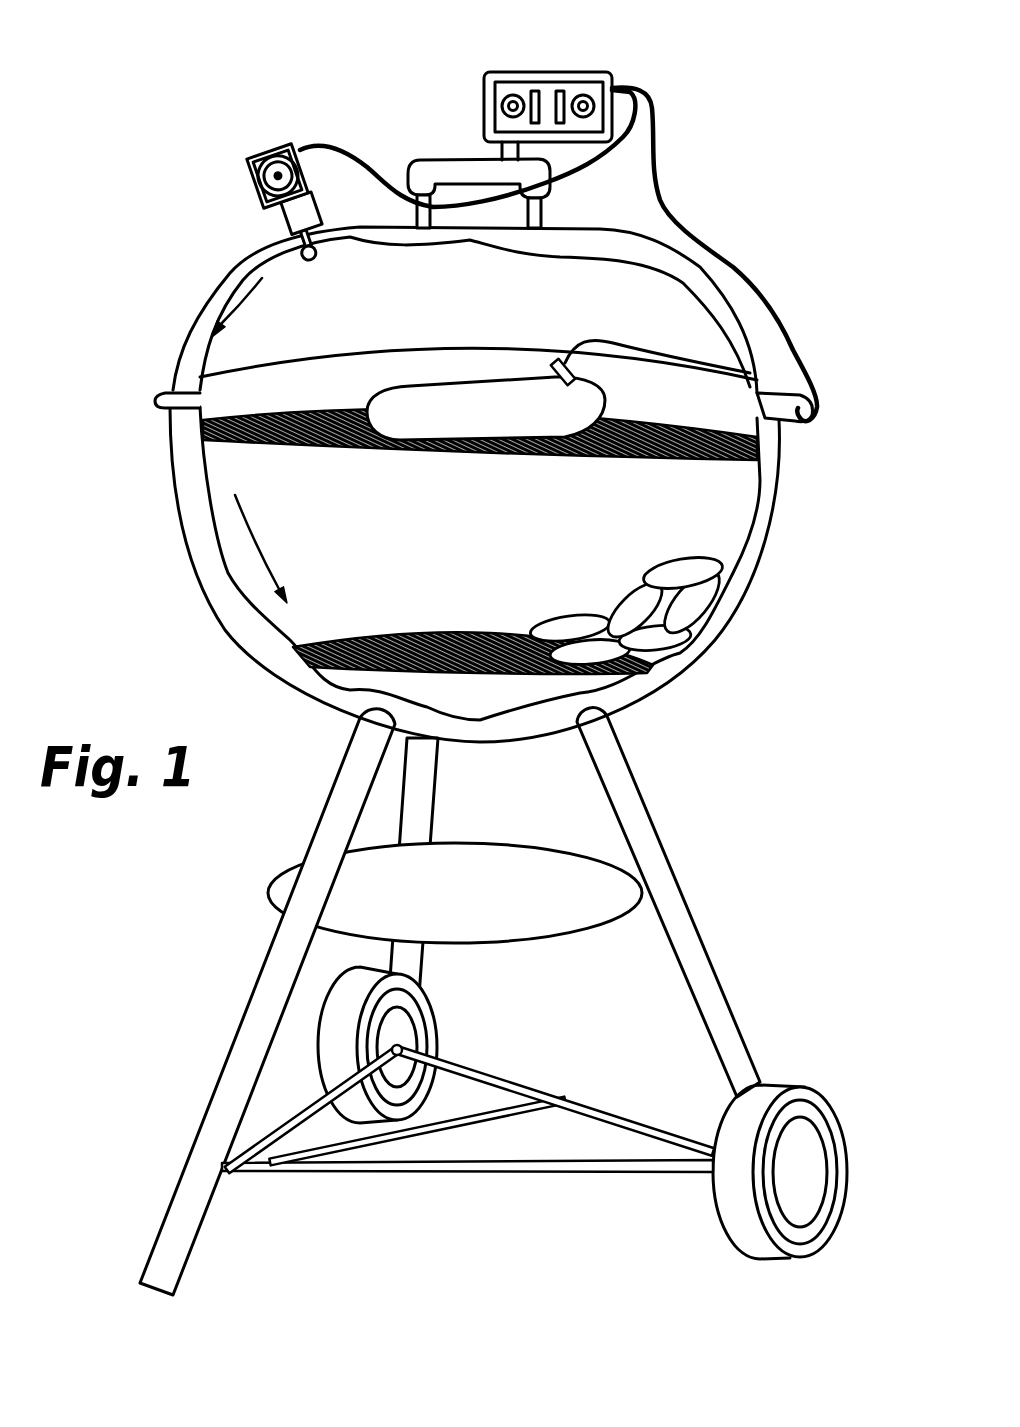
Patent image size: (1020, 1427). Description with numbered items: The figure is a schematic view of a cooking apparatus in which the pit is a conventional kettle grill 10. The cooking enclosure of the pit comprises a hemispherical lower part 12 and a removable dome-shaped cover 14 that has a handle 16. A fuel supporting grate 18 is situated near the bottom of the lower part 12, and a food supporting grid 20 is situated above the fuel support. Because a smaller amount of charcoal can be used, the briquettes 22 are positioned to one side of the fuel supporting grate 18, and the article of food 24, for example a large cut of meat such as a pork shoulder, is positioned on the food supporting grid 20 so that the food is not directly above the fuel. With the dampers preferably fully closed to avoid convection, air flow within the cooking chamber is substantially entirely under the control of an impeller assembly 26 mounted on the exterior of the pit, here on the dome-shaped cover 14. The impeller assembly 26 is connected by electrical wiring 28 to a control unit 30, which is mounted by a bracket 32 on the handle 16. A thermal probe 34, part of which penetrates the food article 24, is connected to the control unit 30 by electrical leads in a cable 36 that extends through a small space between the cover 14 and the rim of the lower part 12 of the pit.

The kettle grill 10 is at (738, 678).
The lower part 12 is at (780, 521).
The dome-shaped cover 14 is at (212, 296).
The handle 16 is at (460, 160).
The fuel supporting grate 18 is at (427, 637).
The food supporting grid 20 is at (323, 440).
The briquettes 22 is at (720, 598).
The article of food 24 is at (437, 393).
The impeller assembly 26 is at (244, 139).
The electrical wiring 28 is at (337, 147).
The control unit 30 is at (547, 72).
The bracket 32 is at (512, 152).
The thermal probe 34 is at (547, 351).
The cable 36 is at (748, 274).